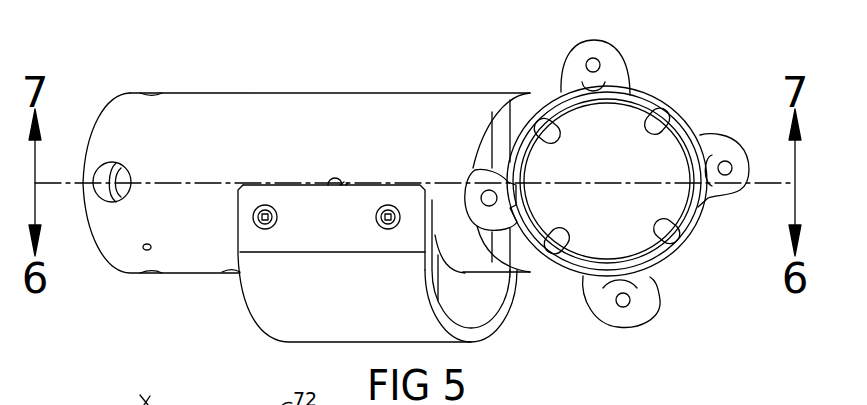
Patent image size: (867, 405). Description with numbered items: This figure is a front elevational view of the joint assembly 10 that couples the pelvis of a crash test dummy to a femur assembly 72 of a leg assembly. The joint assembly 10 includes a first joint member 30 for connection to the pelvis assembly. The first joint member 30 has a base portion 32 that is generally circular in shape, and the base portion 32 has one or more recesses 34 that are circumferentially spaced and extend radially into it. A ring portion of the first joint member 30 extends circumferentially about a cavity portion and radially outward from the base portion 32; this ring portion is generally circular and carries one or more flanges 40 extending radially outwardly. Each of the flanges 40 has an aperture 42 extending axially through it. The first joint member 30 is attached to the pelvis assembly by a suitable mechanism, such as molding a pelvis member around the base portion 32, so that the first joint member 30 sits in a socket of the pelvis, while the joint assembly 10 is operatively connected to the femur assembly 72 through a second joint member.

The joint assembly 10 is at (617, 188).
The first joint member 30 is at (649, 92).
The base portion 32 is at (607, 181).
The recesses 34 is at (666, 120).
The flanges 40 is at (728, 190).
The aperture 42 is at (723, 161).
The femur assembly 72 is at (288, 93).